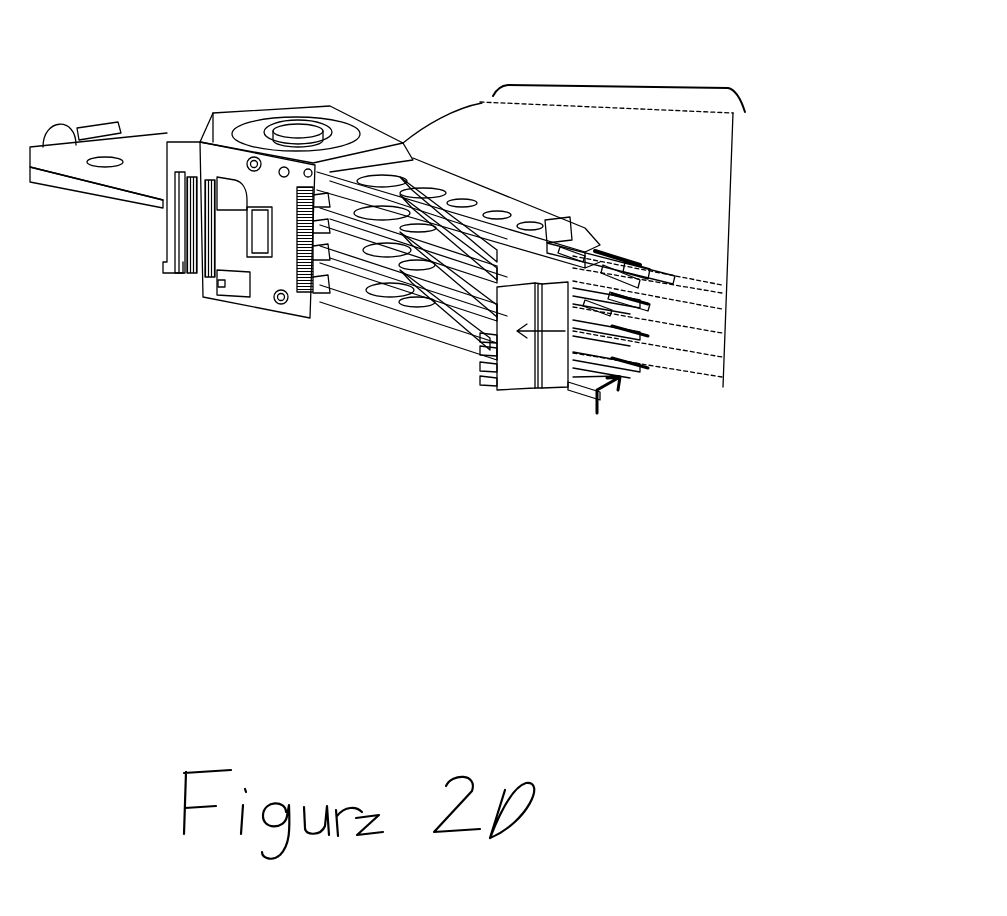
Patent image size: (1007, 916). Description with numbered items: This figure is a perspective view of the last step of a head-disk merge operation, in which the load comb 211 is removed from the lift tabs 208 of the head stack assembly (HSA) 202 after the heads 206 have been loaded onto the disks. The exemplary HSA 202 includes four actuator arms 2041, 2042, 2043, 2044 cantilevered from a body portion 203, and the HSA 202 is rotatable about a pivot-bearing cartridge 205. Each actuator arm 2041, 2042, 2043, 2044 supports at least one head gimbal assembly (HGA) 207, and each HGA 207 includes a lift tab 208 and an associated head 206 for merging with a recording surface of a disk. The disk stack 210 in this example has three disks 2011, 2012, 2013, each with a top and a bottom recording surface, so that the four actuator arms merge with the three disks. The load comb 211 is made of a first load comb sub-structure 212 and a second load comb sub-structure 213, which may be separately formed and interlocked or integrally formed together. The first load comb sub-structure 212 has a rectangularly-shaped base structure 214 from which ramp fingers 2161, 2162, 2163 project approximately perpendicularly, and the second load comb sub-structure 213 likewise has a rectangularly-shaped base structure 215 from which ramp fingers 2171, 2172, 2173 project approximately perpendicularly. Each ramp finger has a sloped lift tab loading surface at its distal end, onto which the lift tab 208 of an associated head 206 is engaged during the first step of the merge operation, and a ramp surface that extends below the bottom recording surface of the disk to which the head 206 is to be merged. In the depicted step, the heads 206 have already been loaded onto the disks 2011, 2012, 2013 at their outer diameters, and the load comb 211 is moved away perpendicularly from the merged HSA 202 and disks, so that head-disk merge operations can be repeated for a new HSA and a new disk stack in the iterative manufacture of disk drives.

The first disk 2011 is at (707, 152).
The second disk 2012 is at (713, 333).
The third disk 2013 is at (688, 364).
The head stack assembly 202 is at (435, 150).
The body portion 203 is at (333, 111).
The first actuator arm 2041 is at (548, 226).
The second actuator arm 2042 is at (360, 227).
The third actuator arm 2043 is at (372, 267).
The fourth actuator arm 2044 is at (383, 303).
The pivot-bearing cartridge 205 is at (318, 128).
The head 206 is at (637, 277).
The head gimbal assembly 207 is at (570, 252).
The lift tab 208 is at (648, 272).
The disk stack 210 is at (631, 86).
The load comb 211 is at (617, 387).
The first load comb sub-structure 212 is at (563, 390).
The second load comb sub-structure 213 is at (496, 410).
The base structure 214 is at (551, 375).
The base structure 215 is at (513, 389).
The first ramp finger 2161 is at (640, 307).
The second ramp finger 2162 is at (482, 338).
The third ramp finger 2163 is at (487, 367).
The first ramp finger 2171 is at (600, 305).
The second ramp finger 2172 is at (490, 350).
The third ramp finger 2173 is at (480, 381).